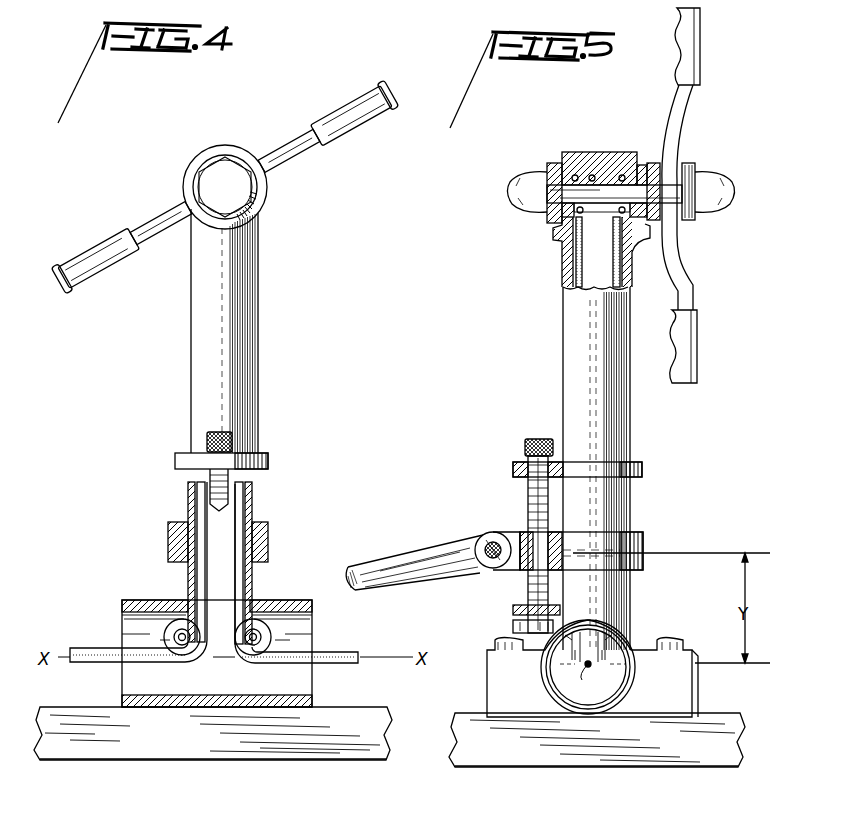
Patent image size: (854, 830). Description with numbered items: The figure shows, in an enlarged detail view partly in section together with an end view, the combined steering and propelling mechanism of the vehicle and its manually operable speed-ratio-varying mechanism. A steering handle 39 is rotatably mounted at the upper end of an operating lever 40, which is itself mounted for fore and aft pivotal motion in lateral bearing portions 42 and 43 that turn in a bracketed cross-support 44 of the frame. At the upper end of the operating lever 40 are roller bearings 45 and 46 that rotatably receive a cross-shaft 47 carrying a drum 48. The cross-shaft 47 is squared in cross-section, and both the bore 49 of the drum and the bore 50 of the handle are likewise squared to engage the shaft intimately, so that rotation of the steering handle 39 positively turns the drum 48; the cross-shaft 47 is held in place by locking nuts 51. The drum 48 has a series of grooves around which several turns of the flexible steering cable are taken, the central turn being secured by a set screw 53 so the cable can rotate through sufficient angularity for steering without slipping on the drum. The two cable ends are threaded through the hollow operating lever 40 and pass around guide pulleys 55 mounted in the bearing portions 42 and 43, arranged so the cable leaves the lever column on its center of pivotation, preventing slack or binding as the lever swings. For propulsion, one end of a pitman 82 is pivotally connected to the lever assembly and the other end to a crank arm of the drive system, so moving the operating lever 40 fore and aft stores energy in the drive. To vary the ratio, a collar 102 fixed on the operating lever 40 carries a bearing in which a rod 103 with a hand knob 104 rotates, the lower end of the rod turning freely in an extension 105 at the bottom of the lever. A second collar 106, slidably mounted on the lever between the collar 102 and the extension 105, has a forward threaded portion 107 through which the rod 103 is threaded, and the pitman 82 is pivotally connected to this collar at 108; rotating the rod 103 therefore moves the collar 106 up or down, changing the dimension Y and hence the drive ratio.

In FIG. 4, the steering handle 39 is at (347, 134).
In FIG. 5, the steering handle 39 is at (692, 112).
In FIG. 4, the operating lever 40 is at (260, 322).
In FIG. 5, the operating lever 40 is at (632, 413).
In FIG. 4, the lateral bearing portion 42 is at (125, 607).
In FIG. 4, the lateral bearing portion 43 is at (313, 612).
In FIG. 5, the lateral bearing portion 43 is at (626, 648).
In FIG. 4, the bracketed cross-support 44 is at (362, 762).
In FIG. 5, the bracketed cross-support 44 is at (465, 762).
In FIG. 5, the roller bearing 45 is at (552, 170).
In FIG. 5, the roller bearing 46 is at (653, 170).
In FIG. 5, the cross-shaft 47 is at (641, 170).
In FIG. 5, the drum 48 is at (555, 236).
In FIG. 5, the bore of the drum 49 is at (592, 184).
In FIG. 5, the bore of the handle 50 is at (700, 190).
In FIG. 5, the locking nuts 51 is at (521, 196).
In FIG. 5, the set screw 53 is at (612, 187).
In FIG. 4, the guide pulleys 55 is at (165, 640).
In FIG. 5, the guide pulleys 55 is at (596, 675).
In FIG. 5, the pitman 82 is at (445, 565).
In FIG. 5, the collar 102 is at (643, 470).
In FIG. 5, the rod 103 is at (528, 495).
In FIG. 5, the hand knob 104 is at (527, 448).
In FIG. 5, the extension 105 is at (513, 625).
In FIG. 5, the second collar 106 is at (643, 545).
In FIG. 5, the forward threaded portion 107 is at (522, 530).
In FIG. 5, the pivotal connection 108 is at (490, 566).